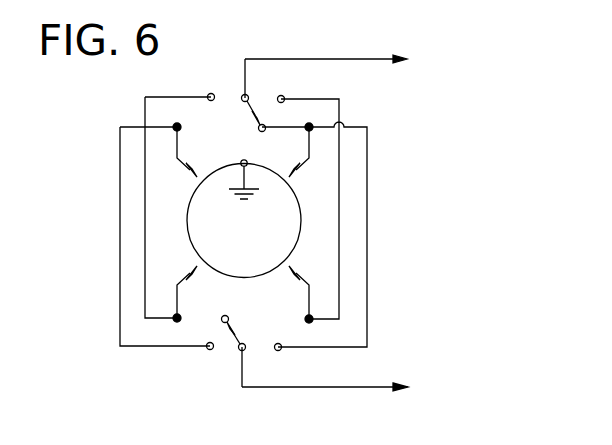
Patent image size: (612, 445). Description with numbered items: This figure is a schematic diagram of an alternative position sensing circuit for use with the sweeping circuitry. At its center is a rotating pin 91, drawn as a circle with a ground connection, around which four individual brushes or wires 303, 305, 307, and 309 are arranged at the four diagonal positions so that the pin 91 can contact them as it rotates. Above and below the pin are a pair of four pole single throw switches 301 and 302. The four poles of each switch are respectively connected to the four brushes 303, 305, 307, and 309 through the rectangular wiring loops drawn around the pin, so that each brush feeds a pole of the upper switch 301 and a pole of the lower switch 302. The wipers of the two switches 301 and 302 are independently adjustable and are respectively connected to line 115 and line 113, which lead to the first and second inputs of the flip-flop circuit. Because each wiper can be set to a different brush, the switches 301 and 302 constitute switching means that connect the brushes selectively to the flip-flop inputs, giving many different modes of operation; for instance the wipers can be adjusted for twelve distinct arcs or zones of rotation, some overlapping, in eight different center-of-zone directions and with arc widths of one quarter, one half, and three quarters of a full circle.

The pin 91 is at (249, 162).
The four pole single throw switch 301 is at (292, 50).
The four pole single throw switch 302 is at (225, 375).
The brush 303 is at (182, 160).
The brush 305 is at (306, 160).
The brush 307 is at (310, 300).
The brush 309 is at (176, 297).
The line 113 is at (335, 388).
The line 115 is at (348, 59).